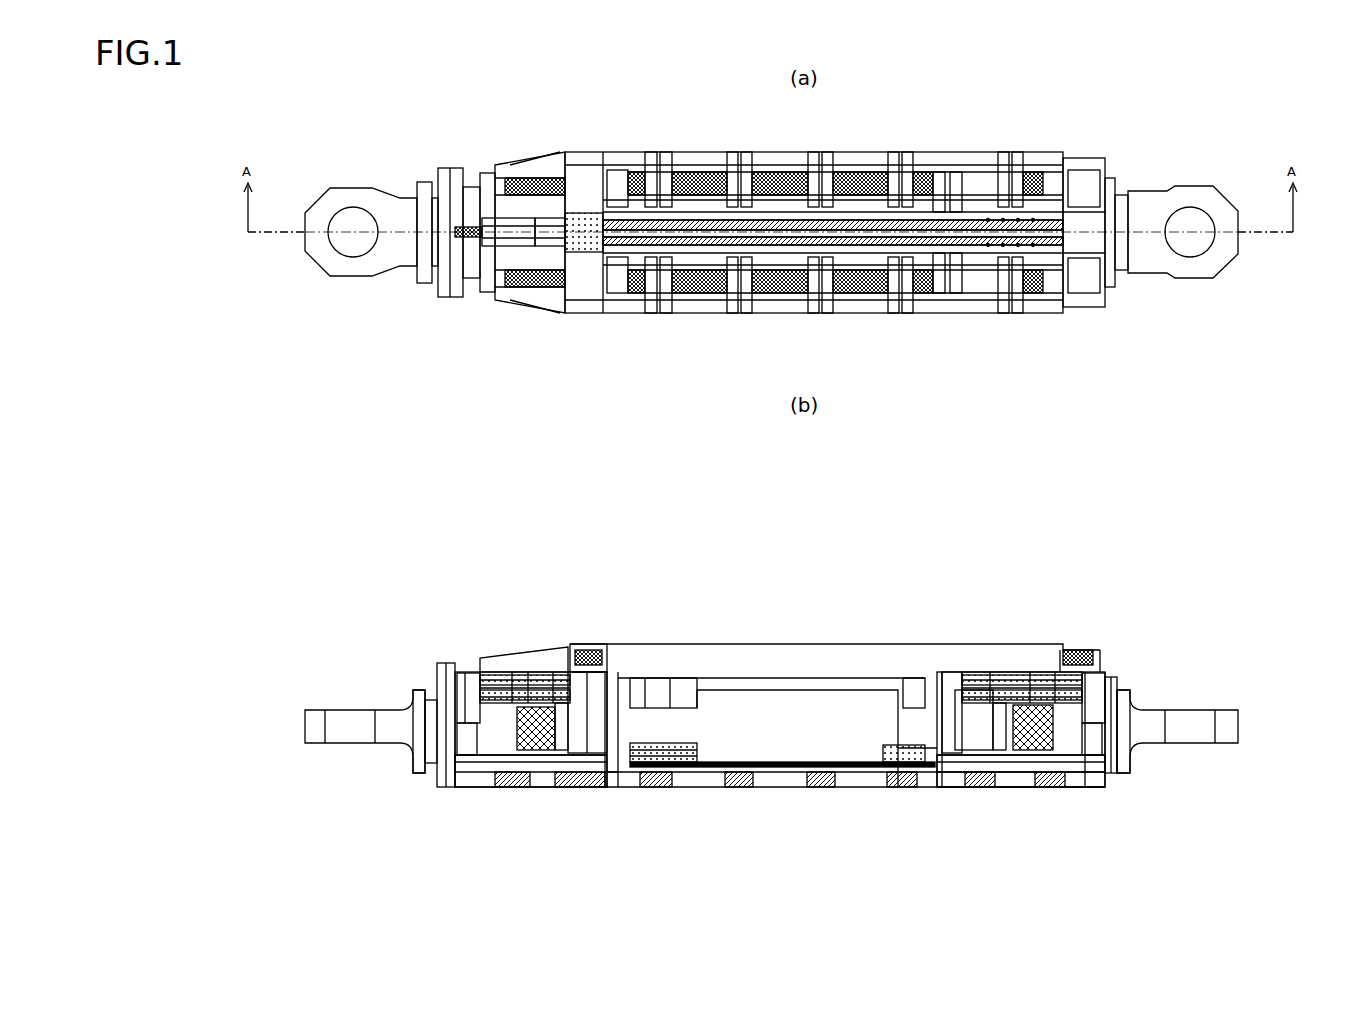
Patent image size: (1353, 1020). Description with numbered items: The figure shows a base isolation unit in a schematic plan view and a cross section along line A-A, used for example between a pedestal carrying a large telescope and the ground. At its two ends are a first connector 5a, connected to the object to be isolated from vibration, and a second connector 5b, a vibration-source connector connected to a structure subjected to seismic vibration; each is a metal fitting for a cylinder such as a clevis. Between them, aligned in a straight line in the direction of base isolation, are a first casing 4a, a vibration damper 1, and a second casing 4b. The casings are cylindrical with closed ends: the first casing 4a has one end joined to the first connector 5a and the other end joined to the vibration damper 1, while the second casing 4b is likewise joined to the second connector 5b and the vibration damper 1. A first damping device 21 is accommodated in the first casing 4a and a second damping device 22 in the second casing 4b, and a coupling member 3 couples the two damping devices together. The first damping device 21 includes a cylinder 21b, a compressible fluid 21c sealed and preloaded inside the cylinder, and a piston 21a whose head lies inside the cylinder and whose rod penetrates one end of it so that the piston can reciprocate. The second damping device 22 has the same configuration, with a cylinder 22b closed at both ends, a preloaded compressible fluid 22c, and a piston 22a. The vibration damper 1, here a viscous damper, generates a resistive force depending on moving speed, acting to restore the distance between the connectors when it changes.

The vibration damper 1 is at (790, 740).
The coupling member 3 is at (820, 662).
The first casing 4a is at (617, 800).
The second casing 4b is at (1115, 800).
The first connector 5a is at (352, 725).
The second connector 5b is at (1193, 725).
The first damping device 21 is at (638, 530).
The piston 21a is at (467, 720).
The cylinder 21b is at (520, 700).
The compressible fluid 21c is at (547, 720).
The second damping device 22 is at (1138, 530).
The piston 22a is at (967, 720).
The cylinder 22b is at (1023, 700).
The compressible fluid 22c is at (1040, 705).